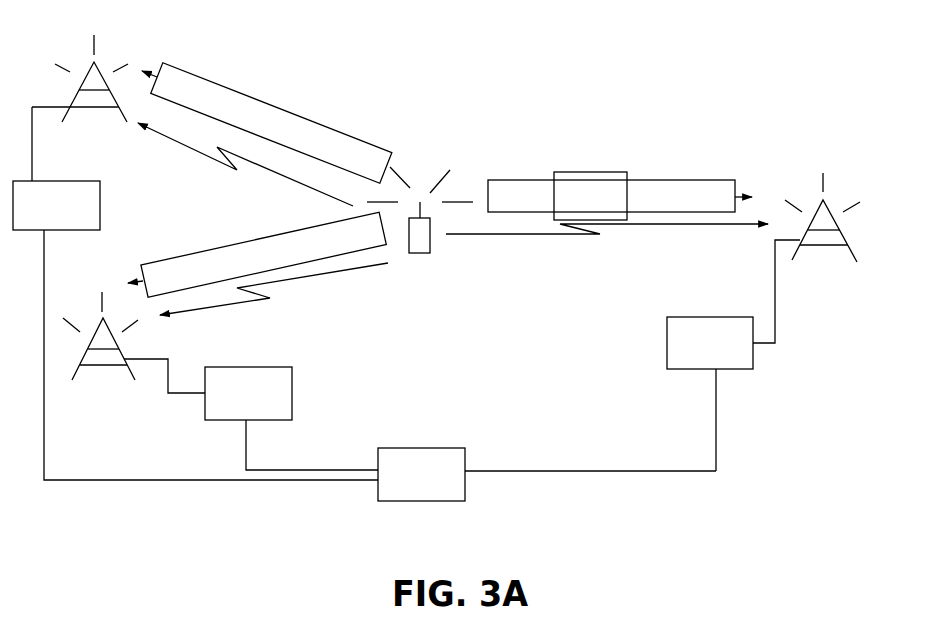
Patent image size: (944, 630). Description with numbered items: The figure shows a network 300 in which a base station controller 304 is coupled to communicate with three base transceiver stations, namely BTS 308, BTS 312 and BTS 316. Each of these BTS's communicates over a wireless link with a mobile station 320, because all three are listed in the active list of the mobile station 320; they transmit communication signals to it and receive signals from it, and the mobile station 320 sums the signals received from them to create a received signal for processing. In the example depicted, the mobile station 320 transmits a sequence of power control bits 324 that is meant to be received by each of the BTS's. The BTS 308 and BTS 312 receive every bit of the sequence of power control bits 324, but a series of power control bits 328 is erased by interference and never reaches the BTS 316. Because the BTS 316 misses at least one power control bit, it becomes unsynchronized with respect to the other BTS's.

The network 300 is at (773, 62).
The base station controller 304 is at (442, 501).
The BTS 308 is at (280, 420).
The BTS 312 is at (61, 230).
The BTS 316 is at (744, 369).
The mobile station 320 is at (423, 253).
The sequence of power control bits 324 is at (306, 106).
The series of power control bits 328 is at (583, 161).